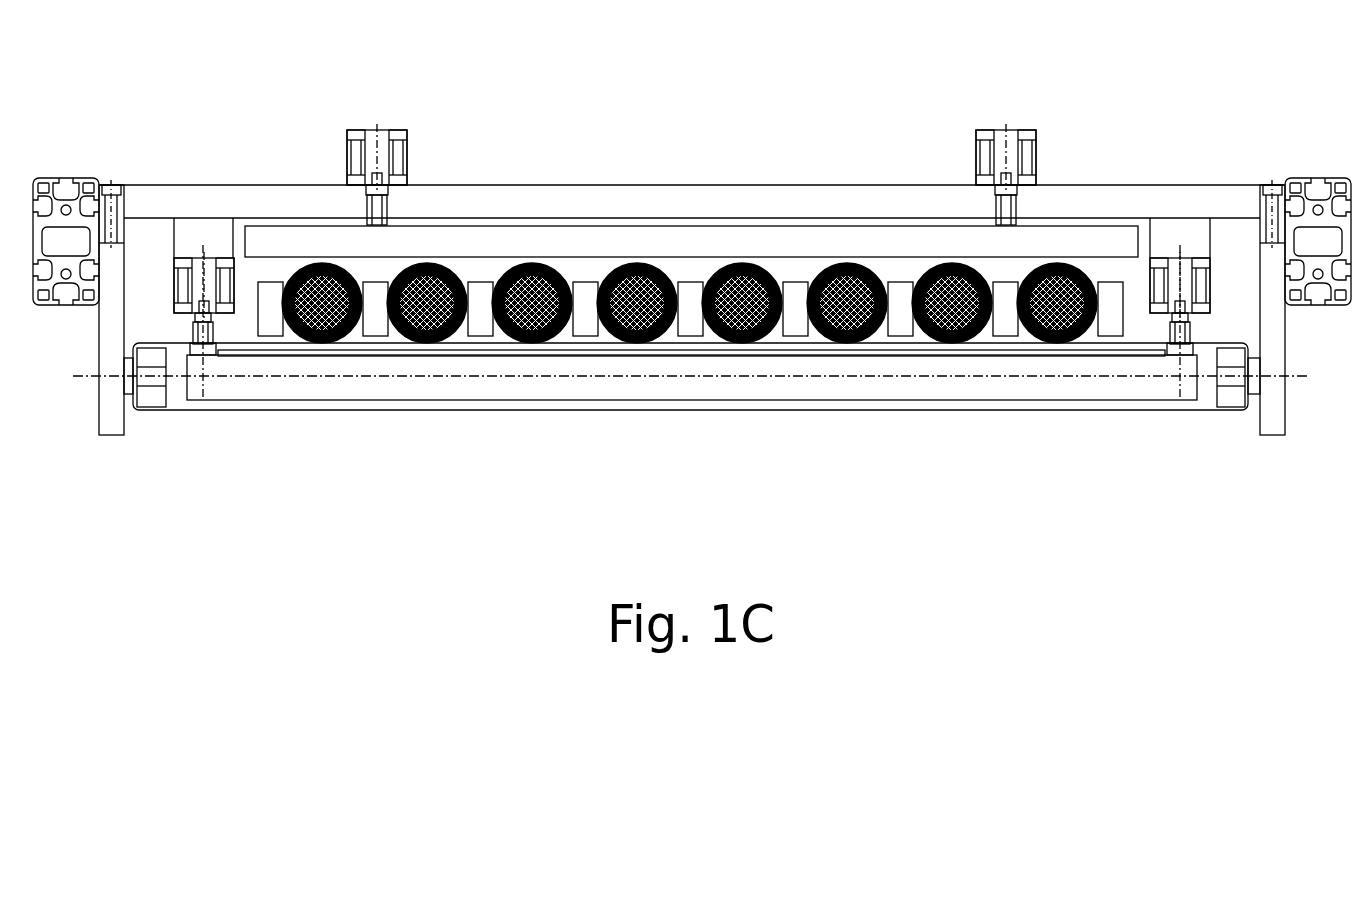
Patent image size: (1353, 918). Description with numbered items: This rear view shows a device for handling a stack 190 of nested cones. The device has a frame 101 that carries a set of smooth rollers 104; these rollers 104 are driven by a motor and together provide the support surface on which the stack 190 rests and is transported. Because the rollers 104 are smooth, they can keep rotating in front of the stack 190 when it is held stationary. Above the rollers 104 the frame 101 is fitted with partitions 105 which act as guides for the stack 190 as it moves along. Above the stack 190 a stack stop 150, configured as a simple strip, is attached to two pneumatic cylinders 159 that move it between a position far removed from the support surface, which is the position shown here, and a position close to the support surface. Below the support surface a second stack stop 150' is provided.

The frame 101 is at (108, 412).
The rollers 104 is at (1140, 410).
The partitions 105 is at (1008, 340).
The stack stop 150 is at (691, 137).
The second stack stop 150' is at (691, 456).
The pneumatic cylinders 159 is at (406, 130).
The stack 190 is at (428, 345).